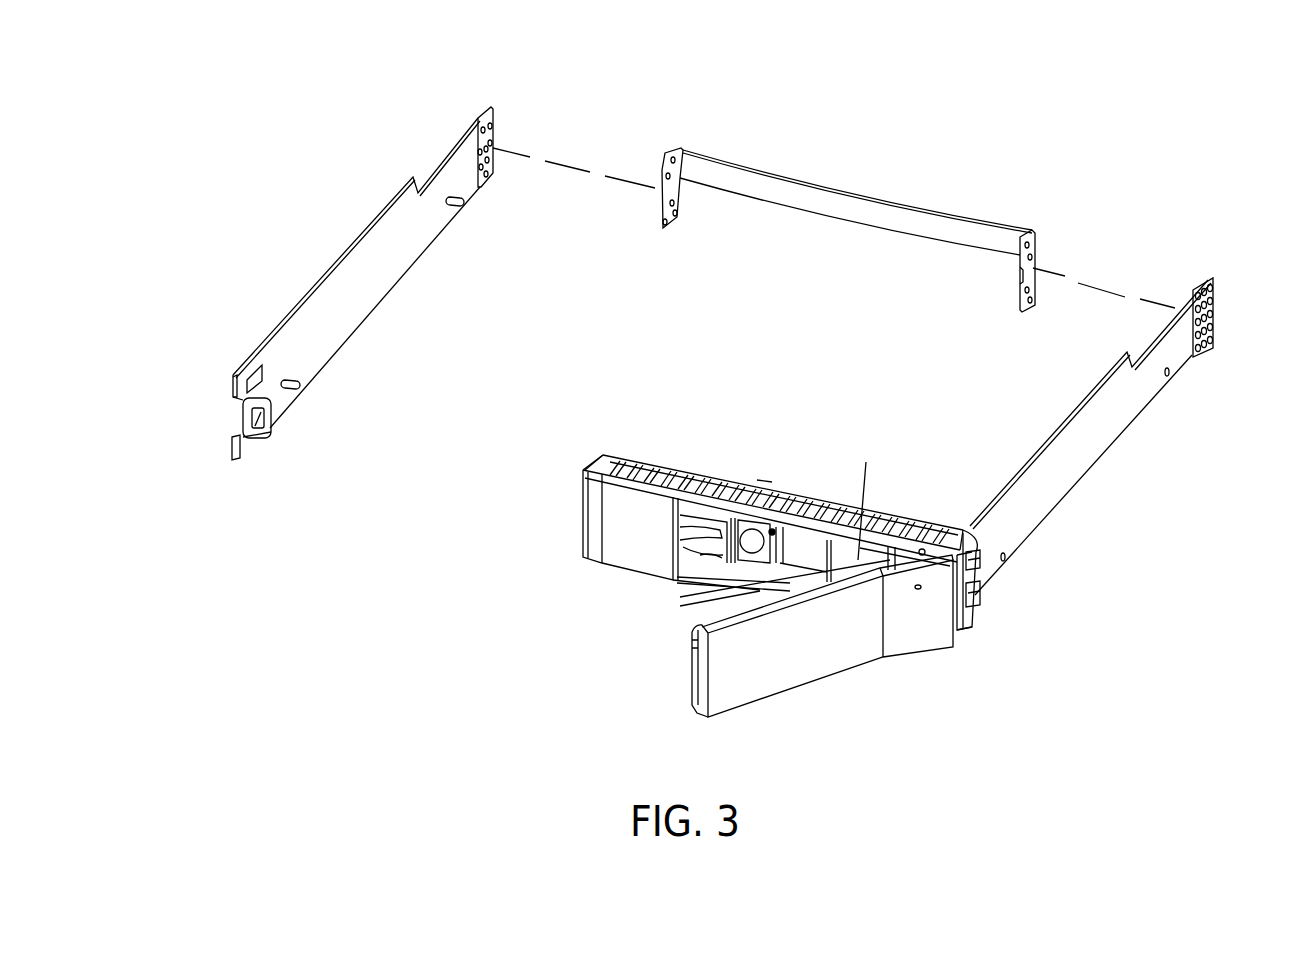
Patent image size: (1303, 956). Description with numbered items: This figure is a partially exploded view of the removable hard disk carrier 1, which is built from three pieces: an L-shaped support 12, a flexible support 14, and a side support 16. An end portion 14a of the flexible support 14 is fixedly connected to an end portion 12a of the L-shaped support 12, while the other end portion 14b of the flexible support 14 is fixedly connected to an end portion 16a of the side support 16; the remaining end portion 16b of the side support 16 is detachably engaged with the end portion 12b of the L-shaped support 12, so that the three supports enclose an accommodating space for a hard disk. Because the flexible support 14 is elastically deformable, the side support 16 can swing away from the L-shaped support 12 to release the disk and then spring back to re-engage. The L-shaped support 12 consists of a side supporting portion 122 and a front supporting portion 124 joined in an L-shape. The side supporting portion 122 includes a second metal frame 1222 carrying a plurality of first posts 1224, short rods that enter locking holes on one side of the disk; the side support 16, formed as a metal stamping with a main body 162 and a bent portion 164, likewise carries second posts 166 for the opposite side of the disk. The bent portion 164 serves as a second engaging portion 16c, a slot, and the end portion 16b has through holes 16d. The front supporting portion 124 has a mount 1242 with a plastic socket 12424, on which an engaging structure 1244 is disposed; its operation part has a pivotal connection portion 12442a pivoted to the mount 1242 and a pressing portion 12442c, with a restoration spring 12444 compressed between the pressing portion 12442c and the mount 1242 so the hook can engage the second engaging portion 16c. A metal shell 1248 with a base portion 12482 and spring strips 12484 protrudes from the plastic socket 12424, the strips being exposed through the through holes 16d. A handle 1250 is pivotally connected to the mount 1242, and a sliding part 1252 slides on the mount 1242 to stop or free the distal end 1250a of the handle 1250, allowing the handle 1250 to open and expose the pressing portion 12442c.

The removable hard disk carrier 1 is at (290, 618).
The L-shaped support 12 is at (990, 367).
The end portion of the L-shaped support 12a is at (1196, 286).
The another end portion of the L-shaped support 12b is at (596, 447).
The side supporting portion 122 is at (1026, 446).
The second metal frame 1222 is at (1057, 487).
The first posts 1224 is at (1171, 372).
The front supporting portion 124 is at (798, 465).
The plastic socket 12424 is at (698, 485).
The mount 1242 is at (977, 625).
The pivotal connection portion 12442a is at (700, 540).
The pressing portion 12442c is at (757, 549).
The engaging structure 1244 is at (718, 562).
The restoration spring 12444 is at (798, 537).
The metal shell 1248 is at (878, 496).
The base portion 12482 is at (924, 517).
The spring strips 12484 is at (757, 479).
The handle 1250 is at (835, 637).
The distal end of the handle 1250a is at (692, 683).
The sliding part 1252 is at (620, 540).
The flexible support 14 is at (858, 200).
The end portion of the flexible support 14a is at (1019, 238).
The another end portion of the flexible support 14b is at (680, 150).
The side support 16 is at (351, 210).
The end portion of the side support 16a is at (486, 112).
The another end portion of the side support 16b is at (236, 388).
The second engaging portion 16c is at (256, 448).
The through holes 16d is at (255, 368).
The main body 162 is at (400, 247).
The bent portion 164 is at (254, 418).
The second posts 166 is at (457, 206).